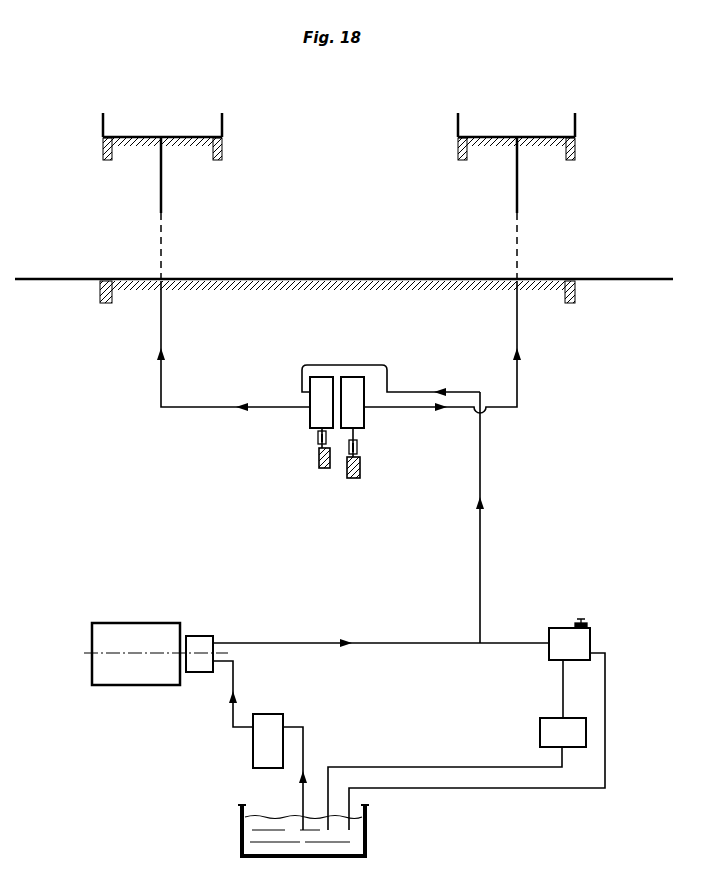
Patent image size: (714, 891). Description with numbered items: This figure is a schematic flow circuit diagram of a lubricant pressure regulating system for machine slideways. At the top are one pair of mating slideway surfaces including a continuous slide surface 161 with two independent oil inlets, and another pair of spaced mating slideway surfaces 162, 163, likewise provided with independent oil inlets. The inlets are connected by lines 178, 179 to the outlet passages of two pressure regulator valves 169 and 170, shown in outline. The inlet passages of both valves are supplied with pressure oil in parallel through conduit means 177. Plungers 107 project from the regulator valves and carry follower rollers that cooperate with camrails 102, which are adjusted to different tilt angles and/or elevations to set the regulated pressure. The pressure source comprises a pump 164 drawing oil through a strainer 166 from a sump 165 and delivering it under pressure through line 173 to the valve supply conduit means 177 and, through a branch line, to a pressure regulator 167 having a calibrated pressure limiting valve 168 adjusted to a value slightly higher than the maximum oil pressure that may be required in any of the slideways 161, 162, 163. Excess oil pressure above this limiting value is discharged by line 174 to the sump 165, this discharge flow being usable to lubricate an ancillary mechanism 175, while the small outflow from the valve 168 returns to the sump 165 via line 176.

The continuous slide surface 161 is at (540, 288).
The spaced slideway surface 162 is at (538, 145).
The spaced slideway surface 163 is at (142, 145).
The pump 164 is at (200, 640).
The sump 165 is at (252, 836).
The strainer 166 is at (258, 754).
The pressure regulator 167 is at (563, 636).
The calibrated pressure limiting valve 168 is at (584, 620).
The pressure regulator valve 169 is at (360, 422).
The pressure regulator valve 170 is at (315, 420).
The line 173 is at (395, 643).
The line 174 is at (563, 697).
The ancillary mechanism 175 is at (548, 734).
The line 176 is at (605, 698).
The conduit means 177 is at (377, 388).
The line 178 is at (517, 329).
The line 179 is at (161, 330).
The plunger 107 is at (320, 438).
The camrail 102 is at (318, 462).